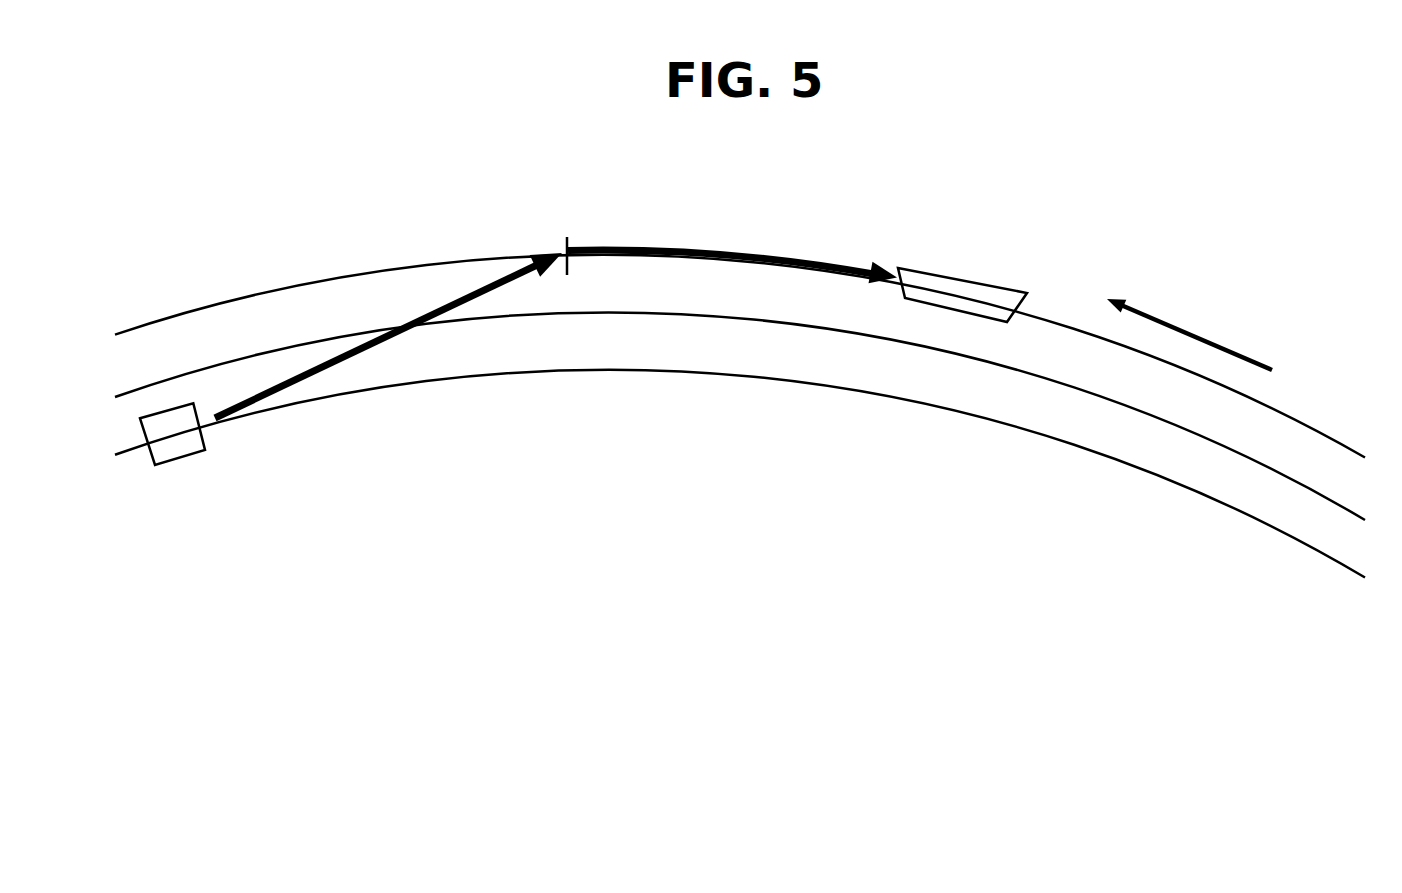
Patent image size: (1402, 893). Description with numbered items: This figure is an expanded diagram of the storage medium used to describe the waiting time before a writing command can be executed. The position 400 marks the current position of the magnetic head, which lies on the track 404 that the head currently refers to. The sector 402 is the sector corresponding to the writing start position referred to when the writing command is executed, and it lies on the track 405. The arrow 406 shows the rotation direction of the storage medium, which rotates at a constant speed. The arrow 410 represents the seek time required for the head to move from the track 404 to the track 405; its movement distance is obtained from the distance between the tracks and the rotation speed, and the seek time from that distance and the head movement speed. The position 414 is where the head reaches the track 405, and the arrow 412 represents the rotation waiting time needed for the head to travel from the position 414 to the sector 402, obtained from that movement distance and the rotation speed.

The position 400 is at (175, 457).
The sector 402 is at (952, 283).
The track 404 is at (1180, 483).
The track 405 is at (1297, 420).
The arrow 406 is at (1160, 320).
The arrow 410 is at (313, 377).
The arrow 412 is at (712, 250).
The position 414 is at (562, 250).